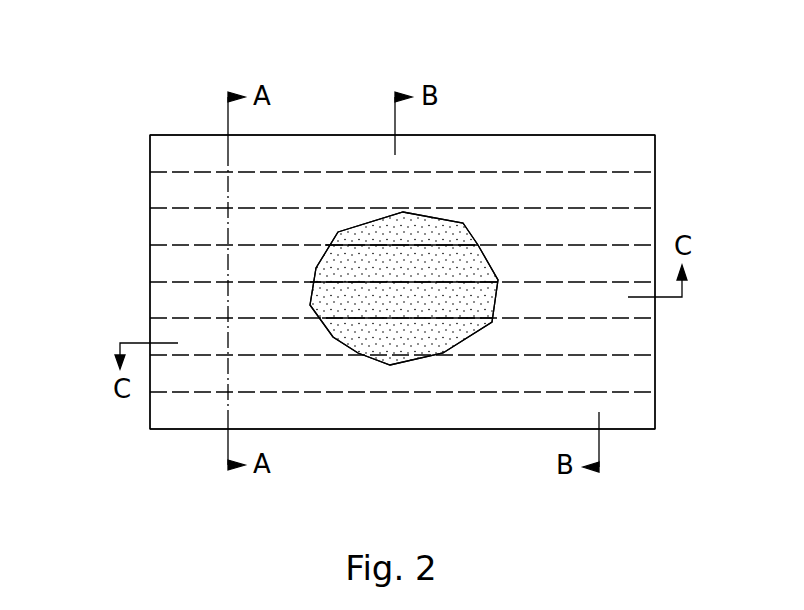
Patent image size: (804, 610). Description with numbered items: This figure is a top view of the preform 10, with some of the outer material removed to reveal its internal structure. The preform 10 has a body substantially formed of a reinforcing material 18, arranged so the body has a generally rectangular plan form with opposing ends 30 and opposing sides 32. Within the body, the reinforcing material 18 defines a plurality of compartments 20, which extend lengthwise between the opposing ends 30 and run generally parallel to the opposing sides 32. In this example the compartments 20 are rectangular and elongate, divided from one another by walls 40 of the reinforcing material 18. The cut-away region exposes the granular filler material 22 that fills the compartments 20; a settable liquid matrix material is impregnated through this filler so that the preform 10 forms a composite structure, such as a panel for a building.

The preform 10 is at (109, 154).
The reinforcing material 18 is at (493, 210).
The compartments 20 is at (360, 265).
The granular filler material 22 is at (397, 260).
The opposing ends 30 is at (150, 223).
The opposing sides 32 is at (333, 135).
The walls 40 is at (472, 318).